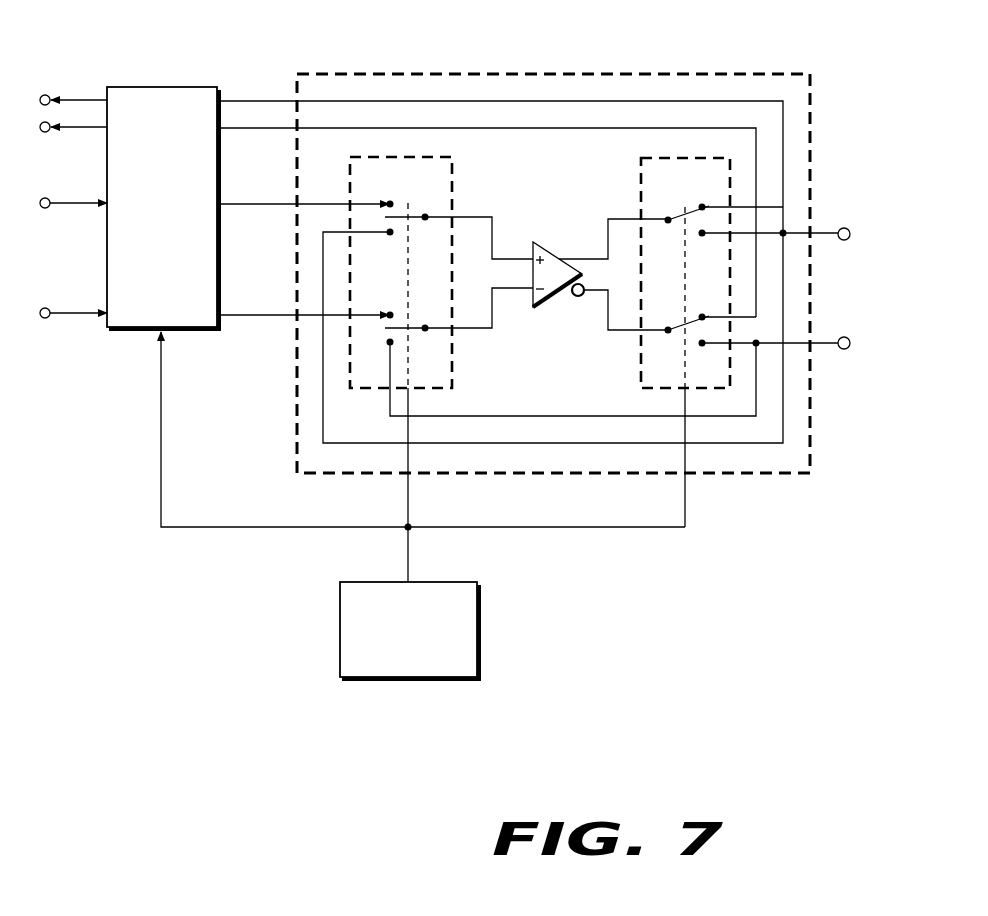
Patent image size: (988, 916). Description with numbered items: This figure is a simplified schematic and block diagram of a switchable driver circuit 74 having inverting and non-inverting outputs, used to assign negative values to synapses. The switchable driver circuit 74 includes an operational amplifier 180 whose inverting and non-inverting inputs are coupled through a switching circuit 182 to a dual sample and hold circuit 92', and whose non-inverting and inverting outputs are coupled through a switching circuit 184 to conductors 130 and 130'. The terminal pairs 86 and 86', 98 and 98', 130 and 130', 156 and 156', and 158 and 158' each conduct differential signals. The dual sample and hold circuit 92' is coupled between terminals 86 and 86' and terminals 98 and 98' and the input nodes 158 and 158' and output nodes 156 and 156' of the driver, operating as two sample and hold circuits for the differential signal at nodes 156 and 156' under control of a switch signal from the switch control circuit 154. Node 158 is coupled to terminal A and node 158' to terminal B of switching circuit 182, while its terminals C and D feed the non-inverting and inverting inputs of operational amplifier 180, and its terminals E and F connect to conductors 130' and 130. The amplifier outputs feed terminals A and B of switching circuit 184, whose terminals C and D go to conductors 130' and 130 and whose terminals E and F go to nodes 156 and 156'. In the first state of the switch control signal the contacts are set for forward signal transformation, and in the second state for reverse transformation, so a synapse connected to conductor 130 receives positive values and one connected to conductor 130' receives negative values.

The switchable driver circuit 74 is at (763, 476).
The dual sample and hold circuit 92' is at (164, 188).
The terminal 98 is at (73, 79).
The terminal 98' is at (71, 148).
The terminal 86 is at (71, 225).
The terminal 86' is at (71, 335).
The node 156 is at (500, 252).
The node 156' is at (486, 272).
The node 158 is at (303, 226).
The node 158' is at (303, 337).
The switching circuit 182 is at (453, 362).
The switching circuit 184 is at (640, 362).
The operational amplifier 180 is at (548, 251).
The conductor 130 is at (796, 213).
The conductor 130' is at (796, 366).
The switch control circuit 154 is at (478, 653).